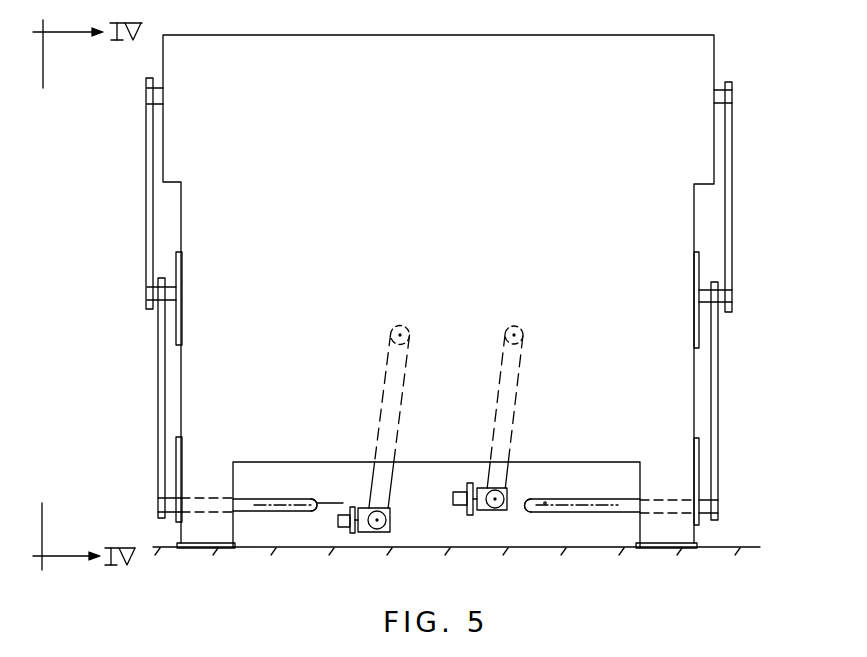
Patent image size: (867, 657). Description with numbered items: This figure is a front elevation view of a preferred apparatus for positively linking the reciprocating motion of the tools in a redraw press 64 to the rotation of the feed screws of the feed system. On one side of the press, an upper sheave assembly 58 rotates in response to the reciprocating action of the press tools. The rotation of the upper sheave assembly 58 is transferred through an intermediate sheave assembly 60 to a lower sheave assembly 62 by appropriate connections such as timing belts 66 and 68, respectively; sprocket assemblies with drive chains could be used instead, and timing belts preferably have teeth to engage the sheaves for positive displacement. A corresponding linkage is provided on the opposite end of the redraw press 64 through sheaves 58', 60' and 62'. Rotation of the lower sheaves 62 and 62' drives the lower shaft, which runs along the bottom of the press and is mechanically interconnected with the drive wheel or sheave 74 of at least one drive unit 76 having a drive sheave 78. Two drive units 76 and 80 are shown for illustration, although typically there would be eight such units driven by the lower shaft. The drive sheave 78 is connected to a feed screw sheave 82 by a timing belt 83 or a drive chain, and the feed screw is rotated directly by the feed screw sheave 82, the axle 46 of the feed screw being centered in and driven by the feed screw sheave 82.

The axle 46 is at (520, 334).
The upper sheave assembly 58 is at (748, 87).
The upper sheave 58' is at (127, 88).
The intermediate sheave assembly 60 is at (740, 296).
The intermediate sheave 60' is at (128, 293).
The lower sheave assembly 62 is at (700, 497).
The lower sheave 62' is at (170, 495).
The redraw press 64 is at (181, 402).
The timing belt 66 is at (733, 242).
The timing belt 68 is at (718, 413).
The drive wheel or sheave 74 is at (467, 491).
The drive unit 76 is at (510, 512).
The drive sheave 78 is at (471, 515).
The drive unit 80 is at (370, 533).
The feed screw sheave 82 is at (505, 333).
The timing belt 83 is at (516, 426).